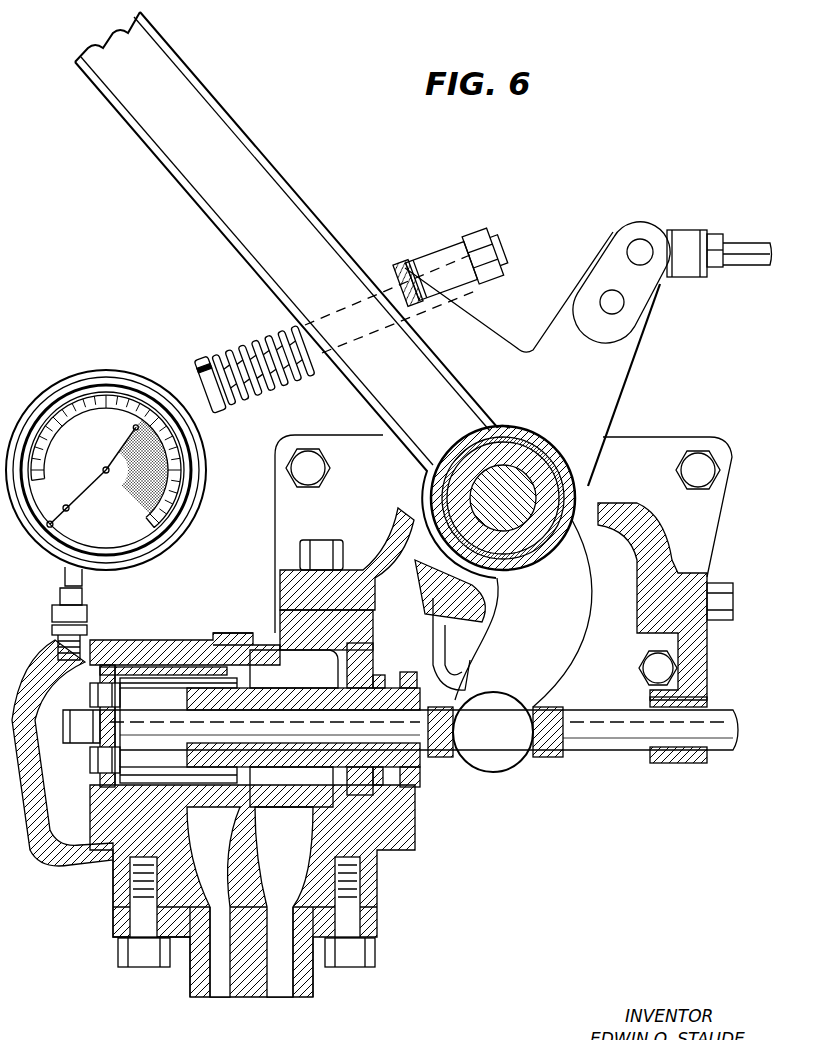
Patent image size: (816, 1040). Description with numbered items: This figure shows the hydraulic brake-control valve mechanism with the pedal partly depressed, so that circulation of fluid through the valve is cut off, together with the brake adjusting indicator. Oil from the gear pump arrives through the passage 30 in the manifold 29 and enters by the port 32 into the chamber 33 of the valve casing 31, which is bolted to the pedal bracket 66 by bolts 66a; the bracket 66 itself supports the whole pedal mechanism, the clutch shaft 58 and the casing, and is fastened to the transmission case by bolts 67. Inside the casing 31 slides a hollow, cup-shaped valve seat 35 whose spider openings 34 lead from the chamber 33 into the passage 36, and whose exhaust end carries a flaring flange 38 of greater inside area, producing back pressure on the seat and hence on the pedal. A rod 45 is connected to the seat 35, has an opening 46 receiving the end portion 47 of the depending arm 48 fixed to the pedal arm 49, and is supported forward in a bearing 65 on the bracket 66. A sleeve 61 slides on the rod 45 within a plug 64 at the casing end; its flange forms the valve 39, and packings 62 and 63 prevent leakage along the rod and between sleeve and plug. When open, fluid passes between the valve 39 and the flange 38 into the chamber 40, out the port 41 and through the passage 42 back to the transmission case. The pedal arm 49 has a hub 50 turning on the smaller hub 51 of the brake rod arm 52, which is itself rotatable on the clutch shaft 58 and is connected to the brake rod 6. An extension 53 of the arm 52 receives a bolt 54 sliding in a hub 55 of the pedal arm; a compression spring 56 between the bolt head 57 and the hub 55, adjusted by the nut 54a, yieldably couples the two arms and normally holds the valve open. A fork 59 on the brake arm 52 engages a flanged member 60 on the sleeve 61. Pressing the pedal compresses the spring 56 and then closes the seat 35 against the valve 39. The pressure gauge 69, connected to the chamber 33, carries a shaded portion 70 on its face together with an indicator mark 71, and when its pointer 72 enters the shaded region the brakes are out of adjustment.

The brake rod 6 is at (740, 260).
The manifold 29 is at (185, 970).
The passage 30 is at (222, 980).
The valve casing 31 is at (90, 845).
The port 32 is at (244, 879).
The chamber 33 is at (81, 726).
The circulation openings 34 is at (112, 680).
The valve seat 35 is at (182, 645).
The passage 36 is at (150, 640).
The flaring flange 38 is at (233, 640).
The valve 39 is at (232, 670).
The chamber 40 is at (300, 680).
The port 41 is at (284, 902).
The passage 42 is at (280, 980).
The rod 45 is at (622, 760).
The opening 46 is at (455, 760).
The end portion 47 is at (493, 732).
The depending arm 48 is at (523, 613).
The pedal arm 49 is at (325, 262).
The hub 50 is at (563, 455).
The hub 51 is at (518, 478).
The brake rod arm 52 is at (612, 396).
The extension 53 is at (470, 335).
The bolt 54 is at (478, 252).
The nut 54a is at (462, 255).
The hub 55 is at (410, 282).
The compression spring 56 is at (232, 368).
The head 57 is at (228, 405).
The clutch shaft 58 is at (462, 465).
The fork 59 is at (478, 648).
The flanged member 60 is at (400, 780).
The sleeve 61 is at (292, 770).
The packing 62 is at (196, 902).
The packing 63 is at (380, 775).
The plug 64 is at (372, 790).
The bearing 65 is at (683, 765).
The pedal bracket 66 is at (372, 540).
The bolts 66a is at (298, 558).
The bolts 67 is at (292, 468).
The pressure gauge 69 is at (56, 385).
The shaded portion 70 is at (150, 440).
The pointer 71 is at (118, 492).
The pointer 72 is at (80, 497).